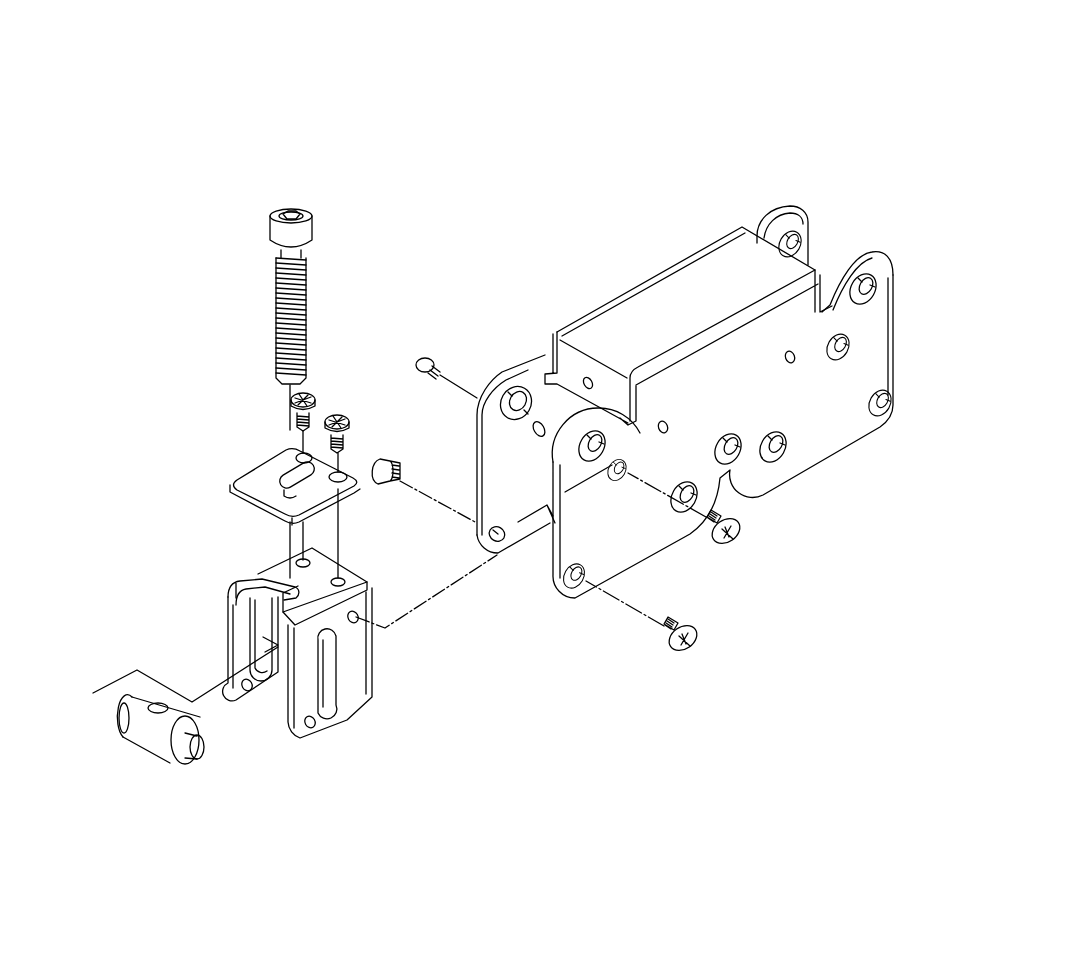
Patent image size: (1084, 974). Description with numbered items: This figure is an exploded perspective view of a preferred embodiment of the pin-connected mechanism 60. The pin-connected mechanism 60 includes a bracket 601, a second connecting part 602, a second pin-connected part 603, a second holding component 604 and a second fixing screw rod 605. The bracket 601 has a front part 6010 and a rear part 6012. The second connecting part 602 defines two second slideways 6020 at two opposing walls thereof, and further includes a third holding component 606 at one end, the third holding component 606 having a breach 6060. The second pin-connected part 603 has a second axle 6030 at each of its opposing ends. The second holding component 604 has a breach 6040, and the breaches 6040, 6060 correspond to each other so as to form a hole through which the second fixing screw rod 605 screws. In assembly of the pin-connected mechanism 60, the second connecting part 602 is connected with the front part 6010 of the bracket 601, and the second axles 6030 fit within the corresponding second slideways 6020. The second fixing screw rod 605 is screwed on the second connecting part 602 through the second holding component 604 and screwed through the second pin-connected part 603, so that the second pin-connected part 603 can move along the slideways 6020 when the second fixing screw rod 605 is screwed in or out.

The pin-connected mechanism 60 is at (858, 115).
The bracket 601 is at (652, 298).
The front part 6010 is at (554, 372).
The rear part 6012 is at (872, 254).
The second fixing screw rod 605 is at (298, 309).
The second holding component 604 is at (248, 480).
The breach 6040 is at (338, 468).
The third holding component 606 is at (313, 573).
The breach 6060 is at (243, 578).
The second connecting part 602 is at (353, 697).
The second slideway 6020 is at (325, 692).
The second pin-connected part 603 is at (143, 742).
The second axle 6030 is at (122, 720).